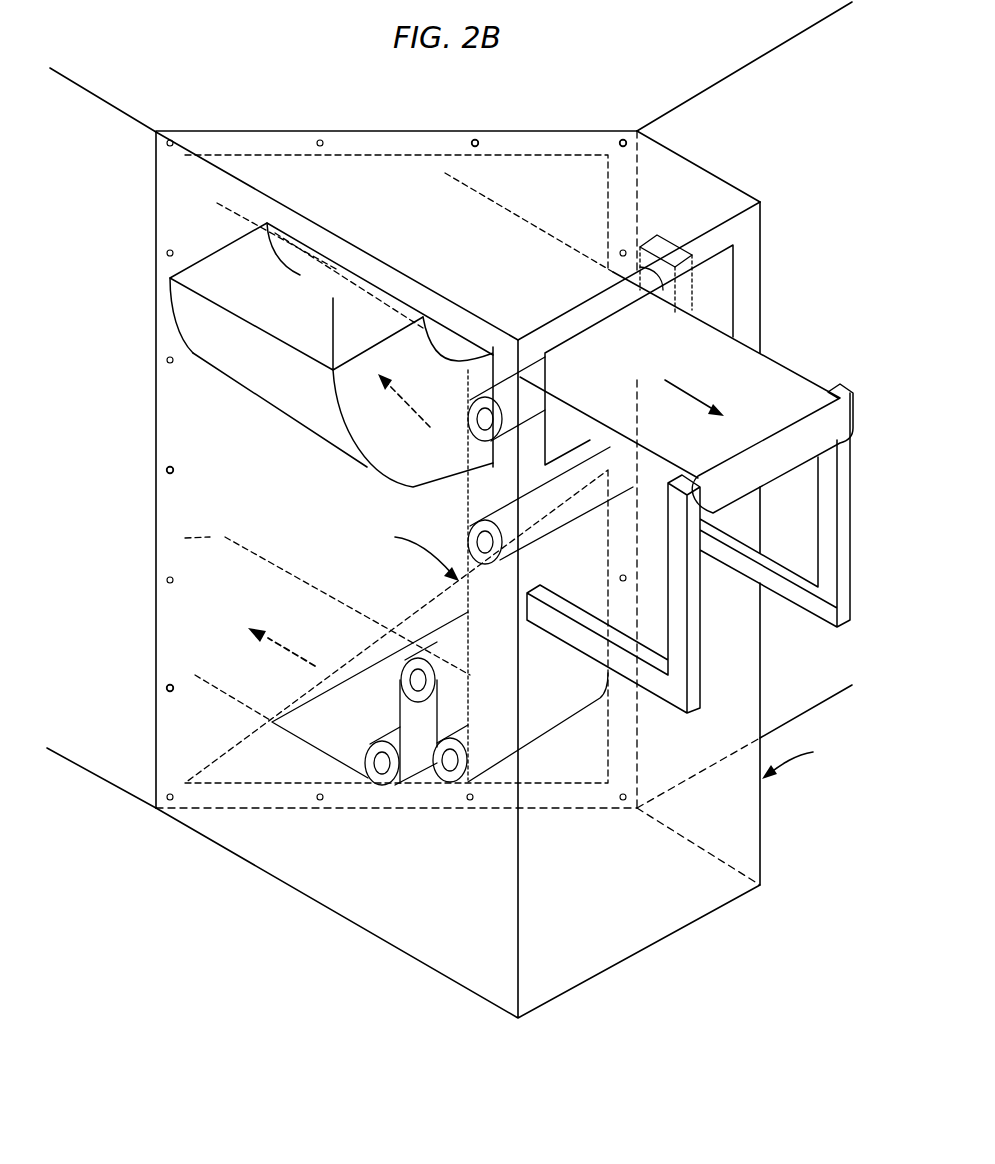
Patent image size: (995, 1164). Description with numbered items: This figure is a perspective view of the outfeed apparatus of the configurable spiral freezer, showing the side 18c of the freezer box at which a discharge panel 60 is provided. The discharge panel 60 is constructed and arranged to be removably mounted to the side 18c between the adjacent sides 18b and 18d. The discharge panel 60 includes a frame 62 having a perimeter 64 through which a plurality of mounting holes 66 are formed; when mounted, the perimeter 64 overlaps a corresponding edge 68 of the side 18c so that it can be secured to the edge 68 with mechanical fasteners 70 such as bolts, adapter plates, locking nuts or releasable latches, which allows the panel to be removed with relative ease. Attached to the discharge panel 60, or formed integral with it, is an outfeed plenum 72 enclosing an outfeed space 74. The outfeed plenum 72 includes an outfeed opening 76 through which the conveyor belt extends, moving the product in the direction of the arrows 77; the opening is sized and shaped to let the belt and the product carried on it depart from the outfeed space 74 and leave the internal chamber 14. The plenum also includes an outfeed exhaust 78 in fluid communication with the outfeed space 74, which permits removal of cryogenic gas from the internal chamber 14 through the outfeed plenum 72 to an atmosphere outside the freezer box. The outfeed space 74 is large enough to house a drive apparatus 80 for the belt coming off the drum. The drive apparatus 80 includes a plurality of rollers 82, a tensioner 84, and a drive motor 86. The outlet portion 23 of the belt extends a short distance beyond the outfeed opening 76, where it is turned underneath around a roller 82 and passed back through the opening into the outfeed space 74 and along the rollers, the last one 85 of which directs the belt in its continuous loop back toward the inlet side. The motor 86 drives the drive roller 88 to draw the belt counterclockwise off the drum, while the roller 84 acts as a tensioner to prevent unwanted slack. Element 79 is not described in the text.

The internal chamber 14 is at (221, 110).
The side 18b is at (86, 166).
The side 18c is at (408, 129).
The side 18d is at (815, 170).
The discharge panel 60 is at (346, 187).
The frame 62 is at (157, 268).
The perimeter 64 is at (182, 218).
The mounting holes 66 is at (478, 141).
The edge 68 is at (155, 457).
The mechanical fasteners 70 is at (166, 688).
The outfeed plenum 72 is at (801, 760).
The outfeed space 74 is at (183, 538).
The outfeed opening 76 is at (712, 297).
The arrows 77 is at (697, 397).
The outfeed exhaust 78 is at (205, 357).
The chute top 79 is at (223, 294).
The drive apparatus 80 is at (414, 577).
The rollers 82 is at (448, 782).
The tensioner 84 is at (403, 678).
The last roller 85 is at (375, 785).
The drive motor 86 is at (678, 250).
The drive roller 88 is at (470, 426).
The outlet portion 23 is at (798, 398).